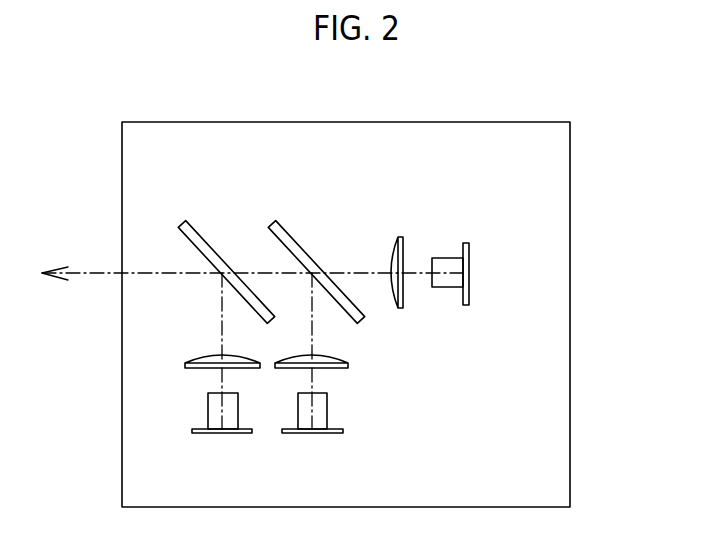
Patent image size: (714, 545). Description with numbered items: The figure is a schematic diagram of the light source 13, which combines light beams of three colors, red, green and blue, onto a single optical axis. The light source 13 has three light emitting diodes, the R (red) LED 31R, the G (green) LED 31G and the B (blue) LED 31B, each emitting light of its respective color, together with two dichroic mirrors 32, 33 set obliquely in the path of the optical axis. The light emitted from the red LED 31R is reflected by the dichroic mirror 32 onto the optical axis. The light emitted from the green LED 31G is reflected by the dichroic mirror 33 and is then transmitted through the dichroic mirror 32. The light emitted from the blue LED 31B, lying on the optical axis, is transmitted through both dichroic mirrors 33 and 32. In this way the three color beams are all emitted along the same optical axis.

The light source 13 is at (570, 168).
The dichroic mirror 32 is at (200, 234).
The dichroic mirror 33 is at (285, 231).
The B (blue) LED 31B is at (447, 258).
The R (red) LED 31R is at (208, 408).
The G (green) LED 31G is at (327, 414).